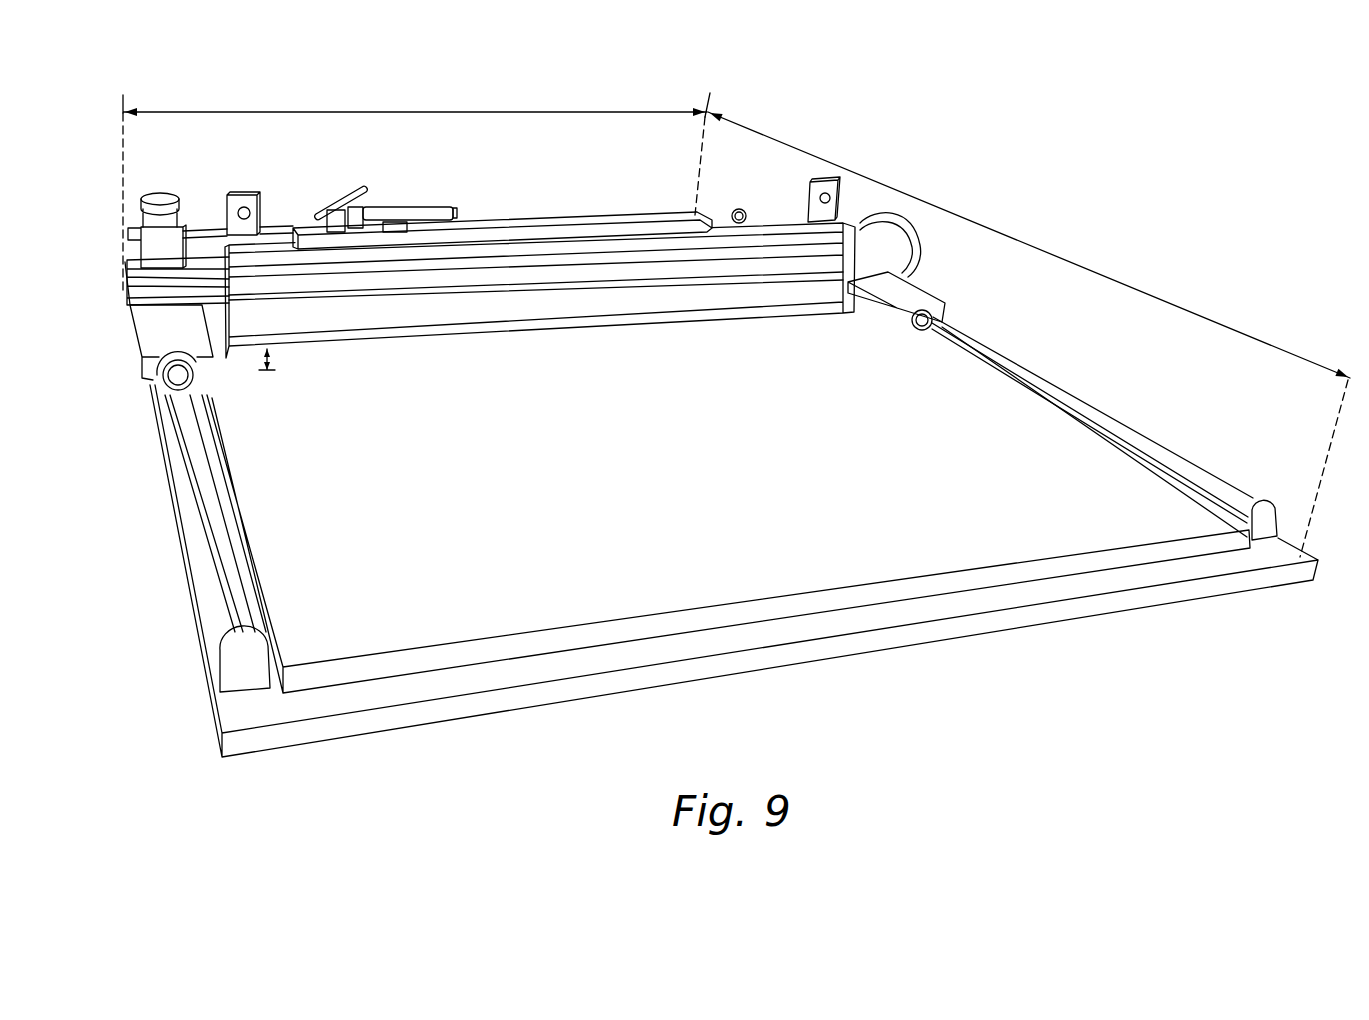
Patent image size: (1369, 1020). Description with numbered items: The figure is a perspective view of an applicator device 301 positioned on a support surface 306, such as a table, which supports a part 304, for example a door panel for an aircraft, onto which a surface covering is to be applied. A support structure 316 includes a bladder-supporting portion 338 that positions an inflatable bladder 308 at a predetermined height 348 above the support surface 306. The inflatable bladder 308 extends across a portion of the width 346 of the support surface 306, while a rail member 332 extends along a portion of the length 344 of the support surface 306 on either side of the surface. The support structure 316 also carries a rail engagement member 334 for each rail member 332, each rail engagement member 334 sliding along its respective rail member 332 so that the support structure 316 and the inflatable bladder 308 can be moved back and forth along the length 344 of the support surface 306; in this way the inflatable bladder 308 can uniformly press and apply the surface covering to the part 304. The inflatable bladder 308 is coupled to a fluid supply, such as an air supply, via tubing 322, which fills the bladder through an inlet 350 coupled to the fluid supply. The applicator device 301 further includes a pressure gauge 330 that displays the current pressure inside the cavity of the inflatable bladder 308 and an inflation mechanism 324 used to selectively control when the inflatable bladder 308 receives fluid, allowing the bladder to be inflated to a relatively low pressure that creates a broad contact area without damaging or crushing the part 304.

The applicator device 301 is at (270, 183).
The part 304 is at (610, 585).
The support surface 306 is at (447, 682).
The inflatable bladder 308 is at (655, 315).
The support structure 316 is at (483, 203).
The tubing 322 is at (452, 232).
The inflation mechanism 324 is at (410, 205).
The pressure gauge 330 is at (153, 203).
The rail member 332 is at (1063, 402).
The rail engagement member 334 is at (922, 283).
The bladder-supporting portion 338 is at (645, 262).
The length 344 is at (1162, 298).
The width 346 is at (540, 108).
The predetermined height 348 is at (264, 372).
The inlet 350 is at (163, 253).